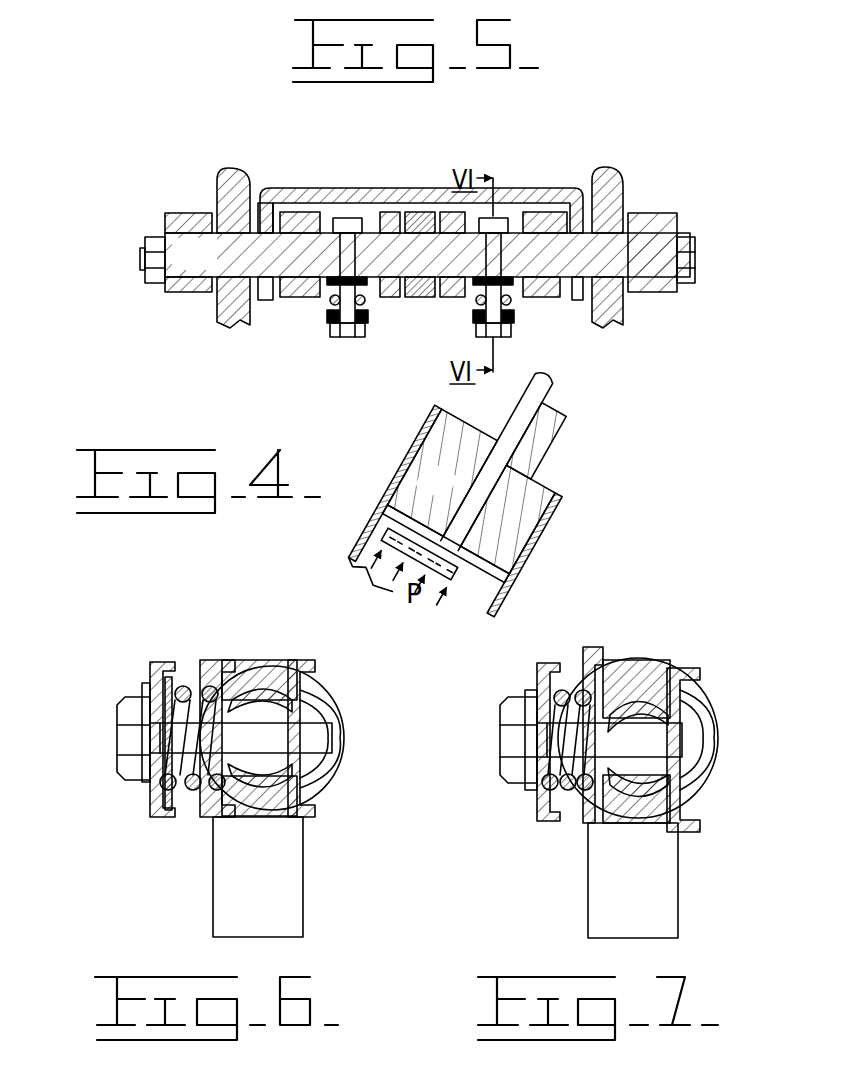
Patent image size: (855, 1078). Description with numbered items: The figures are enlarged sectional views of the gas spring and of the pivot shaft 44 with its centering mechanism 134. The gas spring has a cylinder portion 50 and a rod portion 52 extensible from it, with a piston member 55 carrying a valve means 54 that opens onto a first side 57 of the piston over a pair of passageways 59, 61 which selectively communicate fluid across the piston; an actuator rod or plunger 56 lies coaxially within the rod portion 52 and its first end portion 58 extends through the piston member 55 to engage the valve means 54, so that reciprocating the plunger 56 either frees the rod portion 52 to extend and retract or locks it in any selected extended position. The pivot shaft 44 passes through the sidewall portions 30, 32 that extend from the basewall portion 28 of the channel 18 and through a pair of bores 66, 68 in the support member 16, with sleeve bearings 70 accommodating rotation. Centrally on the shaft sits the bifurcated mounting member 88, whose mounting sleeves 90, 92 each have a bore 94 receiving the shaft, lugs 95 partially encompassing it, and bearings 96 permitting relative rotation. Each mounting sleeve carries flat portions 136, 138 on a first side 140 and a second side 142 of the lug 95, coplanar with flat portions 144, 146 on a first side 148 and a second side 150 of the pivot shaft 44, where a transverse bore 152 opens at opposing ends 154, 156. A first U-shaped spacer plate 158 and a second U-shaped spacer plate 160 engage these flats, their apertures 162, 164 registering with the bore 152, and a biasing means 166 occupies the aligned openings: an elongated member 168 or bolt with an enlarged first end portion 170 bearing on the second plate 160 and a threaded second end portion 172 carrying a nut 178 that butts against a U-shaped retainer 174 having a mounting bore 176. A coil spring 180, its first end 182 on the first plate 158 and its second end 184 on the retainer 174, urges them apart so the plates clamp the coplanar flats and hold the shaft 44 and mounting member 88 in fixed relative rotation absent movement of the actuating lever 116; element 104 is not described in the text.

In FIG. 5, the support member 16 is at (607, 185).
In FIG. 5, the channel 18 is at (575, 196).
In FIG. 5, the basewall portion 28 is at (428, 205).
In FIG. 5, the sidewall portion 30 is at (265, 302).
In FIG. 5, the sidewall portion 32 is at (578, 302).
In FIG. 5, the pivot shaft 44 is at (206, 268).
In FIG. 6, the pivot shaft 44 is at (255, 812).
In FIG. 7, the pivot shaft 44 is at (626, 816).
In FIG. 4, the cylinder portion 50 is at (548, 540).
In FIG. 4, the rod portion 52 is at (556, 436).
In FIG. 4, the valve means 54 is at (393, 530).
In FIG. 4, the piston member 55 is at (440, 500).
In FIG. 4, the actuator rod or plunger 56 is at (549, 392).
In FIG. 4, the first side 57 is at (503, 582).
In FIG. 4, the first end portion 58 is at (478, 556).
In FIG. 4, the passageway 59 is at (462, 532).
In FIG. 4, the passageway 61 is at (541, 490).
In FIG. 5, the bore 66 is at (230, 196).
In FIG. 5, the bore 68 is at (624, 206).
In FIG. 5, the sleeve bearing 70 is at (226, 302).
In FIG. 6, the bifurcated mounting member 88 is at (342, 713).
In FIG. 7, the bifurcated mounting member 88 is at (702, 797).
In FIG. 5, the mounting sleeve 90 is at (387, 200).
In FIG. 5, the mounting sleeve 92 is at (477, 169).
In FIG. 6, the bore 94 is at (258, 664).
In FIG. 7, the bore 94 is at (655, 690).
In FIG. 6, the lug 95 is at (256, 700).
In FIG. 7, the lug 95 is at (668, 672).
In FIG. 5, the bearing 96 is at (370, 290).
In FIG. 5, the top wall 104 is at (450, 203).
In FIG. 5, the actuating lever 116 is at (678, 215).
In FIG. 5, the centering mechanism 134 is at (348, 346).
In FIG. 6, the centering mechanism 134 is at (260, 621).
In FIG. 7, the centering mechanism 134 is at (656, 648).
In FIG. 6, the flat portion 136 is at (200, 688).
In FIG. 7, the flat portion 136 is at (592, 838).
In FIG. 6, the flat portion 138 is at (316, 796).
In FIG. 7, the flat portion 138 is at (697, 671).
In FIG. 6, the first side 140 is at (222, 662).
In FIG. 6, the second side 142 is at (298, 665).
In FIG. 5, the flat portion 144 is at (415, 287).
In FIG. 6, the flat portion 144 is at (241, 738).
In FIG. 7, the flat portion 144 is at (600, 722).
In FIG. 5, the flat portion 146 is at (497, 214).
In FIG. 6, the flat portion 146 is at (330, 776).
In FIG. 7, the flat portion 146 is at (686, 806).
In FIG. 6, the first side 148 is at (330, 745).
In FIG. 6, the second side 150 is at (344, 758).
In FIG. 6, the bore 152 is at (300, 700).
In FIG. 7, the bore 152 is at (692, 722).
In FIG. 5, the opposing end 154 is at (334, 254).
In FIG. 7, the opposing end 154 is at (609, 740).
In FIG. 5, the opposing end 156 is at (356, 254).
In FIG. 7, the opposing end 156 is at (692, 762).
In FIG. 5, the first U-shaped spacer plate 158 is at (332, 292).
In FIG. 6, the first U-shaped spacer plate 158 is at (222, 822).
In FIG. 7, the first U-shaped spacer plate 158 is at (600, 660).
In FIG. 5, the second U-shaped spacer plate 160 is at (323, 230).
In FIG. 6, the second U-shaped spacer plate 160 is at (306, 666).
In FIG. 7, the second U-shaped spacer plate 160 is at (692, 692).
In FIG. 7, the aperture 162 is at (528, 722).
In FIG. 7, the aperture 164 is at (692, 786).
In FIG. 6, the biasing means 166 is at (176, 802).
In FIG. 7, the biasing means 166 is at (565, 812).
In FIG. 6, the elongated member 168 is at (302, 738).
In FIG. 7, the elongated member 168 is at (607, 840).
In FIG. 6, the enlarged first end portion 170 is at (346, 742).
In FIG. 7, the enlarged first end portion 170 is at (702, 746).
In FIG. 6, the threaded second end portion 172 is at (152, 760).
In FIG. 7, the threaded second end portion 172 is at (538, 748).
In FIG. 5, the U-shaped retainer 174 is at (364, 326).
In FIG. 6, the U-shaped retainer 174 is at (152, 667).
In FIG. 6, the mounting bore 176 is at (142, 735).
In FIG. 6, the nut 178 is at (122, 712).
In FIG. 7, the nut 178 is at (516, 738).
In FIG. 5, the coil spring 180 is at (470, 292).
In FIG. 6, the coil spring 180 is at (178, 680).
In FIG. 6, the first end 182 is at (204, 810).
In FIG. 6, the second end 184 is at (154, 800).